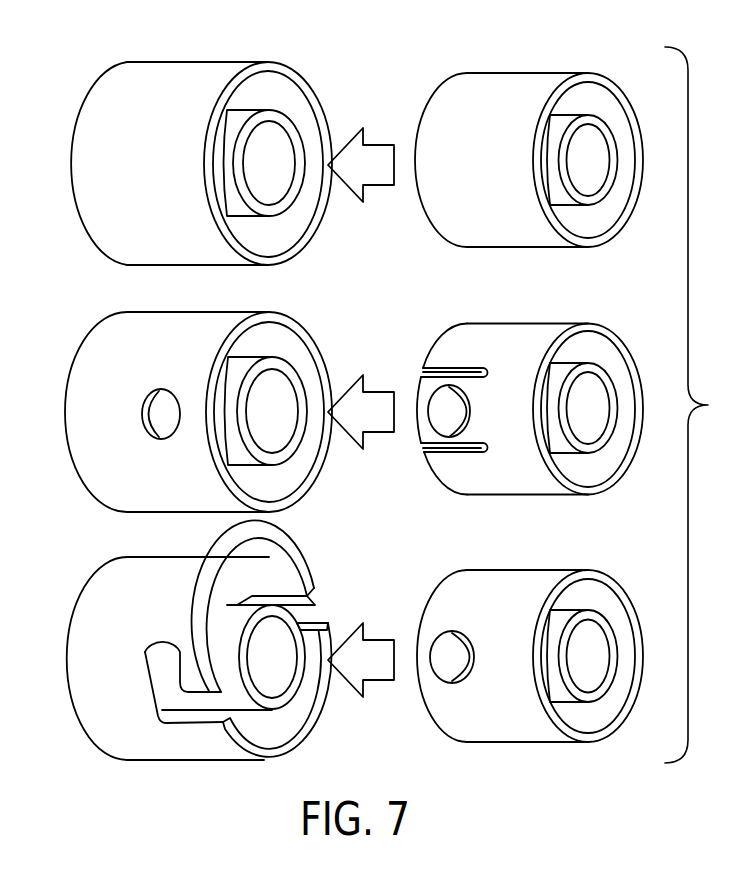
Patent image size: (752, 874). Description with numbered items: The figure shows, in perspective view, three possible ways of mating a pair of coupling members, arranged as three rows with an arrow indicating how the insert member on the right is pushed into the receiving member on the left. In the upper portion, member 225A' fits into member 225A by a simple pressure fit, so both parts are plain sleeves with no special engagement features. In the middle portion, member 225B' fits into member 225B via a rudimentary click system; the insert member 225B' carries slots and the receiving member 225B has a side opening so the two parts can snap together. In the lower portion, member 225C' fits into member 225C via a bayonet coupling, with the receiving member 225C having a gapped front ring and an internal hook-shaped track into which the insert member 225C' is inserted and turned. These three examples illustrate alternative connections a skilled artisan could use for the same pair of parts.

The member 225A is at (201, 141).
The member 225A' is at (529, 137).
The member 225B is at (182, 409).
The member 225B' is at (530, 386).
The member 225C is at (182, 640).
The member 225C' is at (530, 633).